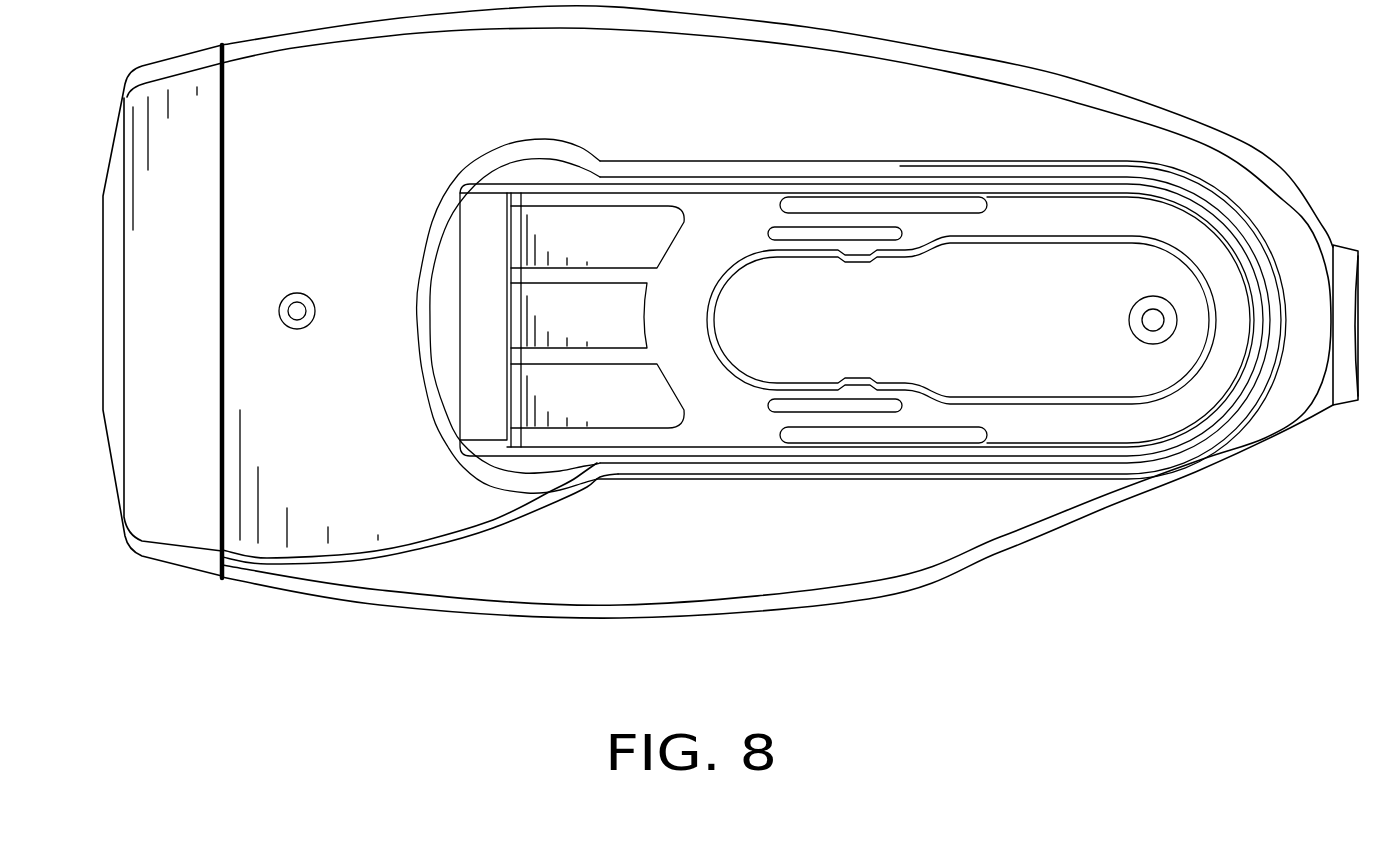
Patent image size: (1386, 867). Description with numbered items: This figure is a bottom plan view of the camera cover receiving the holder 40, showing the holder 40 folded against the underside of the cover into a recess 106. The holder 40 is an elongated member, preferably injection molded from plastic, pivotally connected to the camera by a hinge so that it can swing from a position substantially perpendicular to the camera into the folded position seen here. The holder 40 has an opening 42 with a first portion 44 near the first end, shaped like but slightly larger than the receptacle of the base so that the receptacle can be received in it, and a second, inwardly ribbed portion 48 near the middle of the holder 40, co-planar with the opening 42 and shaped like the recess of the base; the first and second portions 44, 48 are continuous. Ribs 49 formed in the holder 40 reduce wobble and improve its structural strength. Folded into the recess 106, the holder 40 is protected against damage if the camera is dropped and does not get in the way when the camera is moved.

The holder 40 is at (705, 203).
The opening 42 is at (1037, 240).
The first portion 44 is at (1037, 402).
The second, inwardly ribbed portion 48 is at (782, 382).
The ribs 49 is at (945, 208).
The recess 106 is at (1058, 171).